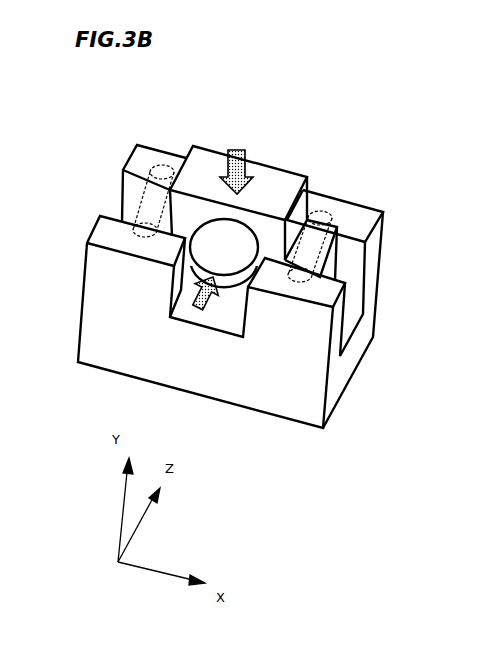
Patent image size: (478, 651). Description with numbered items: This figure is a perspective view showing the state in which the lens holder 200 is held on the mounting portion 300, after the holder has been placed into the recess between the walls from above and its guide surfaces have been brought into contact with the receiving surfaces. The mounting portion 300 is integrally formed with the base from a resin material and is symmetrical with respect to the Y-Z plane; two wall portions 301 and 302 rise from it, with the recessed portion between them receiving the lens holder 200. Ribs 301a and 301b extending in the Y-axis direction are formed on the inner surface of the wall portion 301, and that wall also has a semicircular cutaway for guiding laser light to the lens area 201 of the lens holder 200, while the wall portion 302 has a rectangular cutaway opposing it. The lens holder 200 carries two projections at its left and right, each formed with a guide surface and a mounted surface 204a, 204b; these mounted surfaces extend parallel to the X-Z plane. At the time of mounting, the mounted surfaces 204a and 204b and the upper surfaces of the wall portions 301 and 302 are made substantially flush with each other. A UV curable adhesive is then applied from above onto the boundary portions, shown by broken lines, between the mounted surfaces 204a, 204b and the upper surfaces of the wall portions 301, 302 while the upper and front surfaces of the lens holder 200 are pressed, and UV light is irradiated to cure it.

The lens holder 200 is at (270, 162).
The lens area 201 is at (212, 226).
The mounting portion 300 is at (278, 422).
The wall portion 301 is at (186, 155).
The rib 301a is at (160, 168).
The rib 301b is at (324, 212).
The wall portion 302 is at (105, 216).
The mounted surface 204a is at (122, 203).
The mounted surface 204b is at (308, 265).